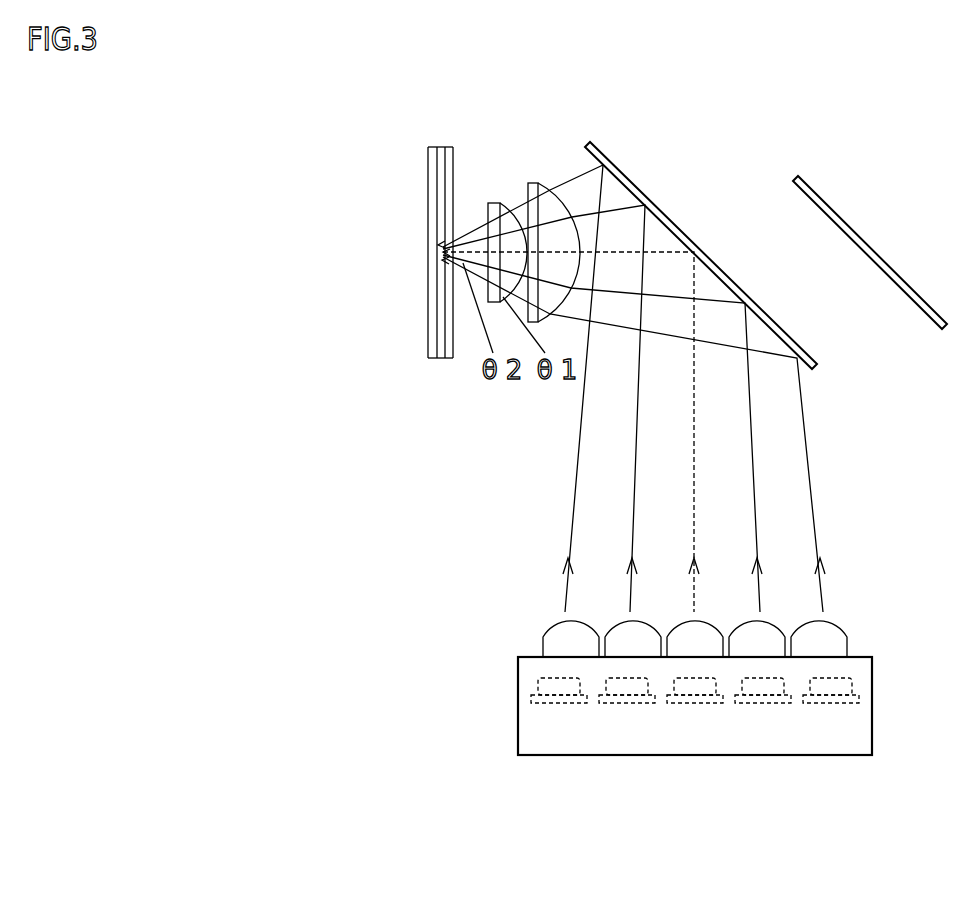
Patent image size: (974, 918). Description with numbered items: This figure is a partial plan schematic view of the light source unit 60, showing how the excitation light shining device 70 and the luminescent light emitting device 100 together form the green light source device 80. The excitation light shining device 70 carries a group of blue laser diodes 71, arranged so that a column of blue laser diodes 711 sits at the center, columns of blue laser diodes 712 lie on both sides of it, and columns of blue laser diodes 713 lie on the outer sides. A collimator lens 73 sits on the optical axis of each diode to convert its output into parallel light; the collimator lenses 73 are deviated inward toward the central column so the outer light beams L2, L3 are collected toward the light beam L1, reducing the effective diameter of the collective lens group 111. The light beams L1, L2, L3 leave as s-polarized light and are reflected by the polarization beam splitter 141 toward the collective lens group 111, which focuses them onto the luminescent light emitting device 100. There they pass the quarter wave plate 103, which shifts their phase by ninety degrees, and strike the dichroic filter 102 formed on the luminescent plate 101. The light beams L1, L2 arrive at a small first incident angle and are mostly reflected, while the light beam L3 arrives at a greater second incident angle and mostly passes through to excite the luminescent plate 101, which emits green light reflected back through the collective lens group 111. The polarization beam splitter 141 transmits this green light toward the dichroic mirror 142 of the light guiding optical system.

The luminescent light emitting device 100 is at (498, 471).
The luminescent plate 101 is at (428, 330).
The dichroic filter 102 is at (438, 147).
The quarter wave plate 103 is at (455, 337).
The green light source device 80 is at (501, 471).
The collective lens group 111 is at (510, 193).
The polarization beam splitter 141 is at (636, 177).
The dichroic mirror 142 is at (827, 200).
The light beam in the blue wavelength range L1 is at (697, 467).
The light beam in the blue wavelength range L2 is at (634, 502).
The light beam in the blue wavelength range L3 is at (572, 528).
The light source unit 60 is at (677, 722).
The excitation light shining device 70 is at (677, 758).
The collimator lens 73 is at (837, 628).
The blue laser diode 71 is at (700, 771).
The blue laser diode 711 is at (710, 707).
The blue laser diode 712 is at (617, 707).
The blue laser diode 713 is at (555, 707).